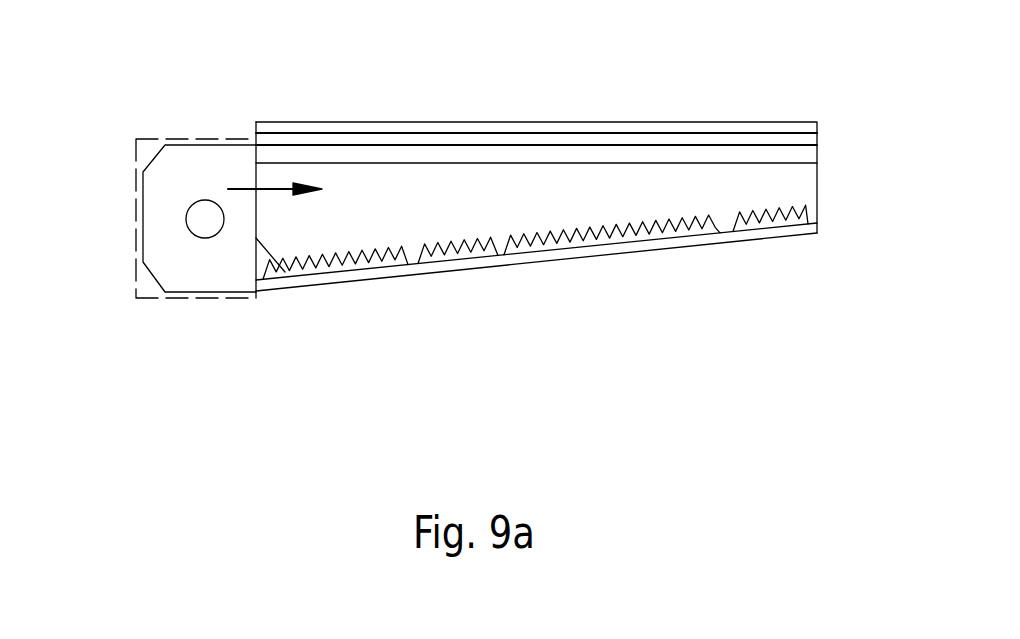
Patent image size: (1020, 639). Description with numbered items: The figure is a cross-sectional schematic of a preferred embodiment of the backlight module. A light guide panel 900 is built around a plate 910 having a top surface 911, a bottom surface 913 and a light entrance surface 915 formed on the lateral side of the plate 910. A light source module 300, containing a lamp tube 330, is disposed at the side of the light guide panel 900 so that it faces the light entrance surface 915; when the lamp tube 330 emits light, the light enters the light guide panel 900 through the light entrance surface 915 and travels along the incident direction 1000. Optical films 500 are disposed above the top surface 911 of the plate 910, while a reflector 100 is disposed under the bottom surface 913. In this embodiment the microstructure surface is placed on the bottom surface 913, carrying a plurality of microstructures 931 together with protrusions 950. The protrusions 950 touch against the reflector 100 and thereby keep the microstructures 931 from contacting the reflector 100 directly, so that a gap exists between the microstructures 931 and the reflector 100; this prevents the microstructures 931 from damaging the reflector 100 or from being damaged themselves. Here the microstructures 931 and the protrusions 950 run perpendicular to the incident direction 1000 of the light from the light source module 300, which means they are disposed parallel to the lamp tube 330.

The incident direction 1000 is at (248, 188).
The top surface 911 is at (388, 163).
The optical films 500 is at (817, 125).
The light guide panel 900 is at (817, 187).
The plate 910 is at (770, 183).
The reflector 100 is at (742, 235).
The bottom surface 913 is at (660, 227).
The protrusions 950 is at (412, 252).
The microstructures 931 is at (340, 258).
The light entrance surface 915 is at (285, 272).
The light source module 300 is at (137, 208).
The lamp tube 330 is at (205, 219).